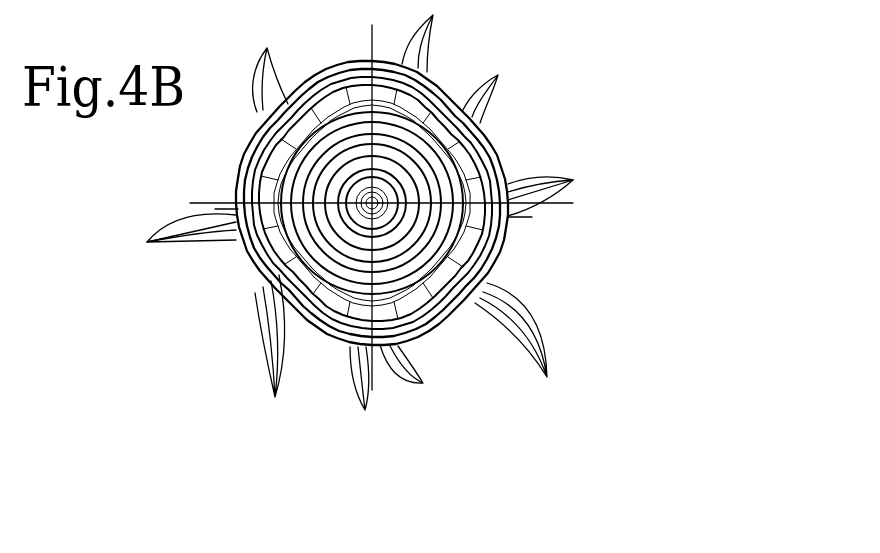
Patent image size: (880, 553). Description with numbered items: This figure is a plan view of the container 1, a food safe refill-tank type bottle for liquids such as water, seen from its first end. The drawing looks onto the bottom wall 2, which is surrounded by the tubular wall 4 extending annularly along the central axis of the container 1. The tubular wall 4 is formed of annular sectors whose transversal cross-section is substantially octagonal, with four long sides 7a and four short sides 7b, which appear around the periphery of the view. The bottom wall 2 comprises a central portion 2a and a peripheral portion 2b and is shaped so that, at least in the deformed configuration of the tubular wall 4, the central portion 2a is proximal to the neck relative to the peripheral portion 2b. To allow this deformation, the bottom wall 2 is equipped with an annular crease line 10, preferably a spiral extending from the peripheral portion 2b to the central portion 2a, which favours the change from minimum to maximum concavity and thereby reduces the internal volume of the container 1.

The container 1 is at (556, 111).
The bottom wall 2 is at (428, 288).
The central portion 2a is at (372, 206).
The peripheral portion 2b is at (265, 275).
The tubular wall 4 is at (503, 267).
The long sides 7a is at (330, 112).
The short sides 7b is at (442, 14).
The annular crease line 10 is at (236, 182).